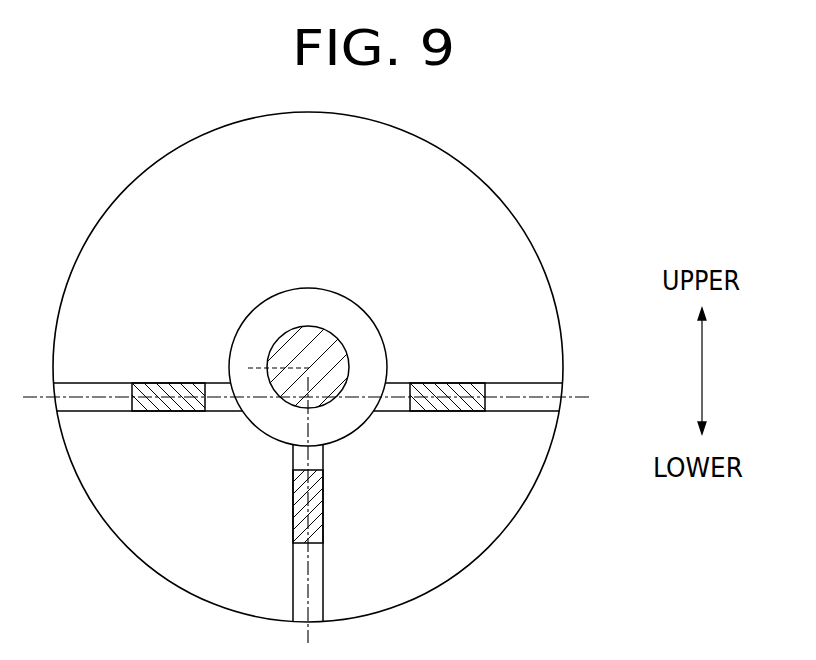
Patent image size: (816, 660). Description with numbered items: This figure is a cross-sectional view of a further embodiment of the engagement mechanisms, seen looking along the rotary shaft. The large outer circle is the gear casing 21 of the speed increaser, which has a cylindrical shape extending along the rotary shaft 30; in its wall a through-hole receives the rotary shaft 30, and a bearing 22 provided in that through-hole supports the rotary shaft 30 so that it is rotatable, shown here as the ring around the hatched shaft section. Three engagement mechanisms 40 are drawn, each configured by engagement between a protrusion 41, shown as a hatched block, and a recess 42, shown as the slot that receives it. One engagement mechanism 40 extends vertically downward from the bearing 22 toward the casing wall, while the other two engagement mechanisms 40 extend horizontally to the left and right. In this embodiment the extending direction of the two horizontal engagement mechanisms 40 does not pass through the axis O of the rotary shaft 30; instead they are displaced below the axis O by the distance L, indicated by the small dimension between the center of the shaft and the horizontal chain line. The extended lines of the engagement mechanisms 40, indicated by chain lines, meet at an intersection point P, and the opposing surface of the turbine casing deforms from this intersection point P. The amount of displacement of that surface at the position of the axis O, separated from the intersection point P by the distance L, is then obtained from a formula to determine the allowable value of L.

The gear casing 21 is at (485, 204).
The bearing 22 is at (347, 305).
The rotary shaft 30 is at (342, 360).
The engagement mechanism 40 is at (152, 413).
The protrusion 41 is at (180, 413).
The recess 42 is at (115, 404).
The axis of the rotary shaft O is at (307, 367).
The intersection point P is at (310, 398).
The displacement distance L is at (260, 350).